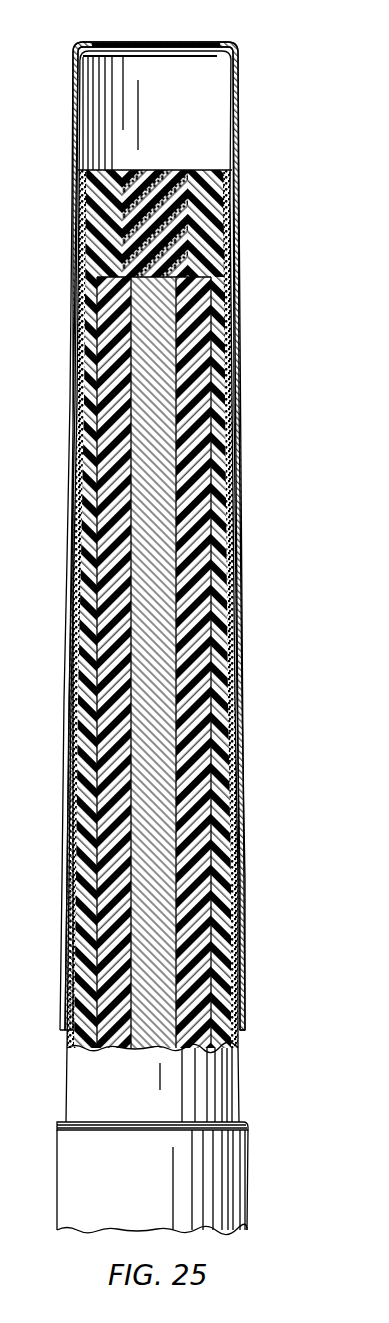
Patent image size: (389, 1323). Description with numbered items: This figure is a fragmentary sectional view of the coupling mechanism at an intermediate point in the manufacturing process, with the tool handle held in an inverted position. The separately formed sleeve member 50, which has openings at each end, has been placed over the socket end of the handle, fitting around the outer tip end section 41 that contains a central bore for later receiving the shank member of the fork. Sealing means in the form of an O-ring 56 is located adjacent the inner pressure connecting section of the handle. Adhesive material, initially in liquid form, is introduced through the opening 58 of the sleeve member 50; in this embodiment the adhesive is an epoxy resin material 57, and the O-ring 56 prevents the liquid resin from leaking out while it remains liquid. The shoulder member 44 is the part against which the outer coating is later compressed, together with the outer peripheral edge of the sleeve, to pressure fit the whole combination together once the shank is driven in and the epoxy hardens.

The sleeve member 50 is at (237, 185).
The opening 58 is at (102, 42).
The O-ring 56 is at (238, 943).
The epoxy resin material 57 is at (156, 183).
The outer tip end section 41 is at (208, 248).
The shoulder member 44 is at (247, 1125).